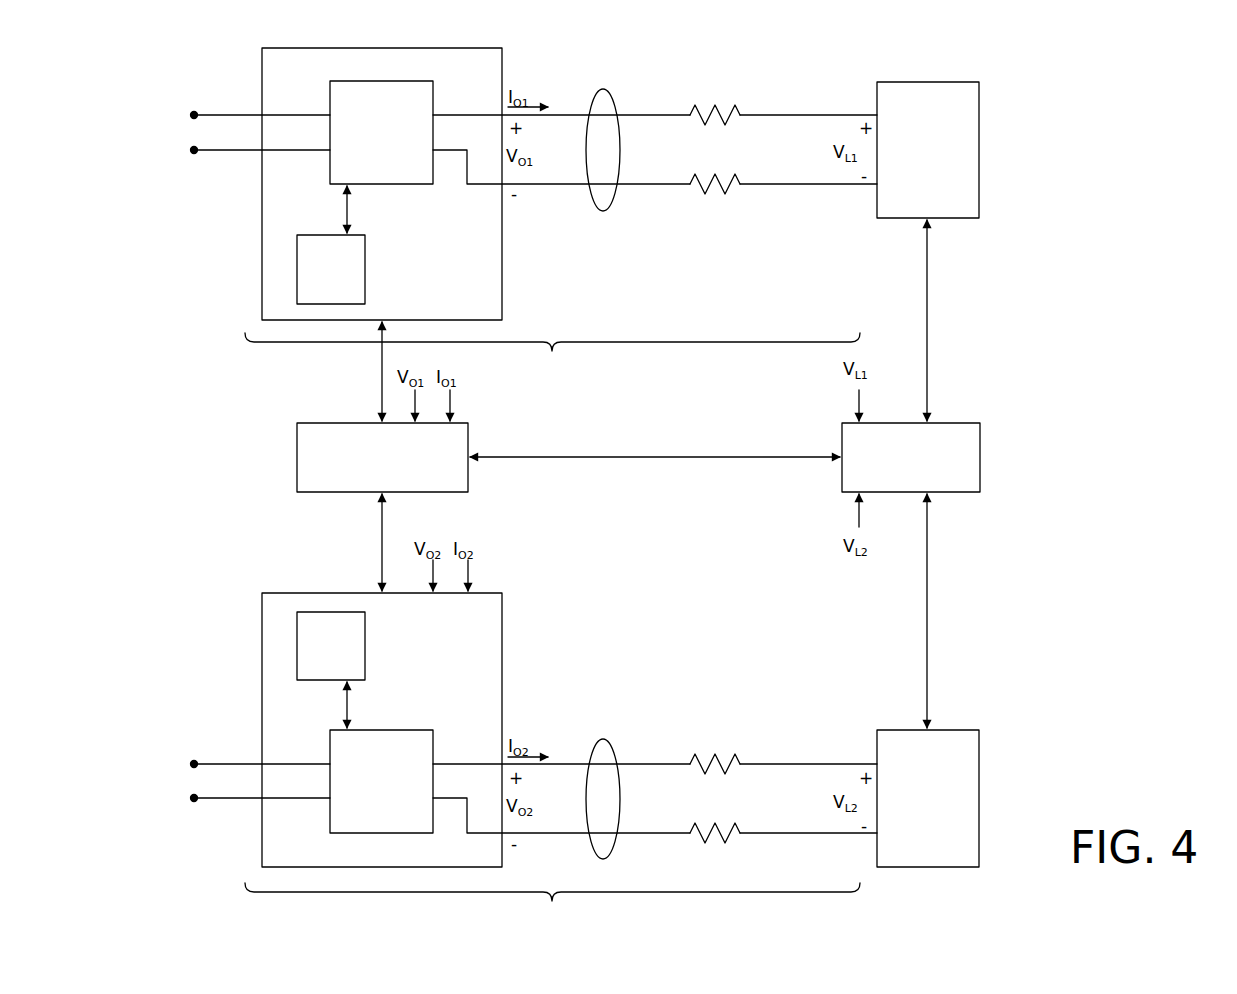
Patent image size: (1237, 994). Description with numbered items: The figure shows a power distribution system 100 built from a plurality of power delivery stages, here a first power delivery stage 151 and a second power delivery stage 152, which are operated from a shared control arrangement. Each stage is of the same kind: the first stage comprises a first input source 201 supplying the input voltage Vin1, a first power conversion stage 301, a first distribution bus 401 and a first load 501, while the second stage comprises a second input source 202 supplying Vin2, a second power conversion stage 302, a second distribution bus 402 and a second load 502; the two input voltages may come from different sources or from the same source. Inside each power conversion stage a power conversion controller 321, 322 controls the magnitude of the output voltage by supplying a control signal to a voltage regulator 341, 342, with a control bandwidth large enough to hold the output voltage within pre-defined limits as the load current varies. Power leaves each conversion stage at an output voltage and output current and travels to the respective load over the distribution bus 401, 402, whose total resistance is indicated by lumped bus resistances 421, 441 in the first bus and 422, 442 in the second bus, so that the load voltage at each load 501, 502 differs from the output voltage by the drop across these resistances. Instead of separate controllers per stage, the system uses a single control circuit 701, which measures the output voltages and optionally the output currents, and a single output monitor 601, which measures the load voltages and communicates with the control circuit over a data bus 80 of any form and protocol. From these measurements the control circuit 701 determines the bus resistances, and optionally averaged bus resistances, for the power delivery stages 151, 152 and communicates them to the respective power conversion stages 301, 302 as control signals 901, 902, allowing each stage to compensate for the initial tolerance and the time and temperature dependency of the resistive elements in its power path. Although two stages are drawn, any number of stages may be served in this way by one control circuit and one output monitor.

The power distribution system 100 is at (847, 40).
The first power delivery stage 151 is at (552, 357).
The second power delivery stage 152 is at (552, 910).
The first input source 201 is at (168, 108).
The second input source 202 is at (168, 755).
The first power conversion stage 301 is at (369, 168).
The second power conversion stage 302 is at (369, 714).
The first power conversion controller 321 is at (358, 243).
The second power conversion controller 322 is at (355, 672).
The first voltage regulator 341 is at (332, 86).
The second voltage regulator 342 is at (426, 738).
The first distribution bus 401 is at (605, 95).
The second distribution bus 402 is at (605, 745).
The lumped bus resistance 421 is at (701, 104).
The lumped bus resistance 422 is at (701, 754).
The lumped bus resistance 441 is at (701, 174).
The lumped bus resistance 442 is at (701, 824).
The first load 501 is at (972, 90).
The second load 502 is at (972, 733).
The output monitor 601 is at (975, 432).
The control circuit 701 is at (297, 432).
The data bus 80 is at (662, 456).
The first control signal 901 is at (380, 383).
The second control signal 902 is at (380, 551).